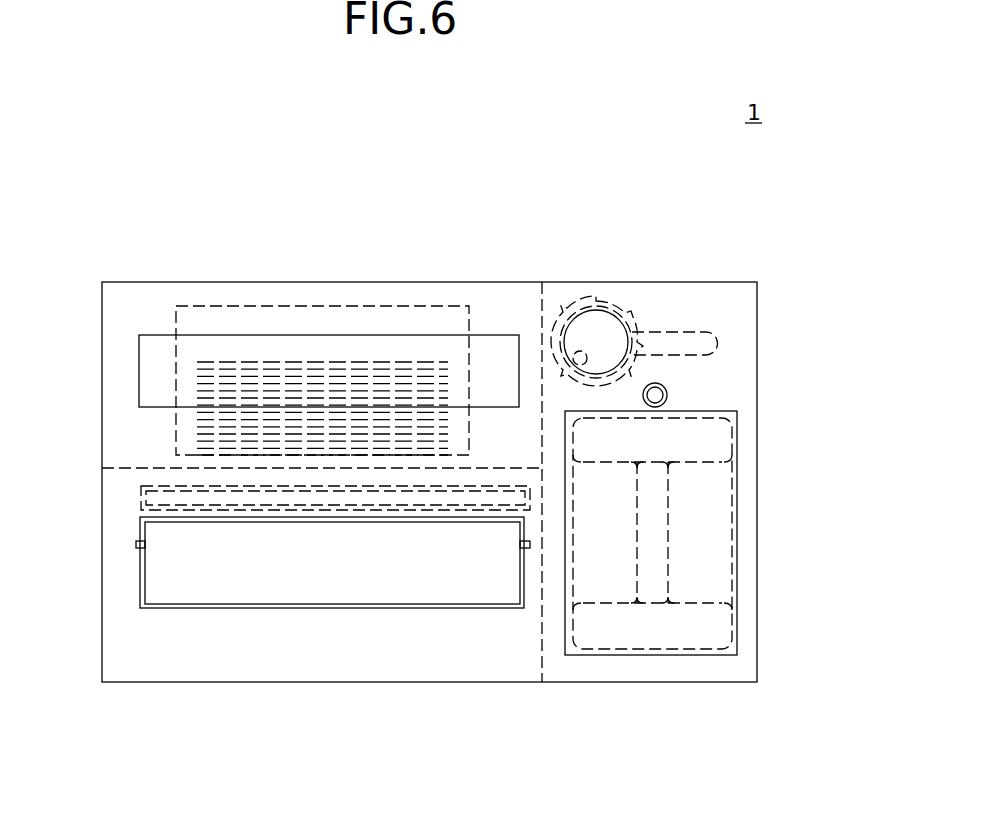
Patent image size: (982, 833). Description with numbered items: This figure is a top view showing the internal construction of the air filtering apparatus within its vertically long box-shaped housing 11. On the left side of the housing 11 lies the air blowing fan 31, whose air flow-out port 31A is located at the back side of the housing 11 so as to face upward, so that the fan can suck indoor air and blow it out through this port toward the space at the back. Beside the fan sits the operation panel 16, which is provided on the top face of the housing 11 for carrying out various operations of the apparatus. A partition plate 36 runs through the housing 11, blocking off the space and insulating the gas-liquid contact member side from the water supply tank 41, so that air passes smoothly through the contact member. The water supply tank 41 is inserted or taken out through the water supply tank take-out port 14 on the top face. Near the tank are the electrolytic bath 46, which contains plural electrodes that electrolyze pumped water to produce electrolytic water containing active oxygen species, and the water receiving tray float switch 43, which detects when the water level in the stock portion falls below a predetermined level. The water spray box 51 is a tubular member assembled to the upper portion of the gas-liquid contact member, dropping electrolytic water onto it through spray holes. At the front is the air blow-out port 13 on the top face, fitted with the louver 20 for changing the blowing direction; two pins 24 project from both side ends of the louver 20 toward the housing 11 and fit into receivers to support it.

The housing 11 is at (740, 282).
The air blow-out port 13 is at (140, 601).
The water supply tank take-out port 14 is at (737, 549).
The operation panel 16 is at (160, 335).
The louver 20 is at (256, 582).
The pin 24 is at (137, 545).
The air blowing fan 31 is at (404, 306).
The air flow-out port 31A is at (297, 362).
The partition plate 36 is at (537, 312).
The water supply tank 41 is at (715, 513).
The water receiving tray float switch 43 is at (667, 395).
The electrolytic bath 46 is at (610, 303).
The water spray box 51 is at (141, 500).